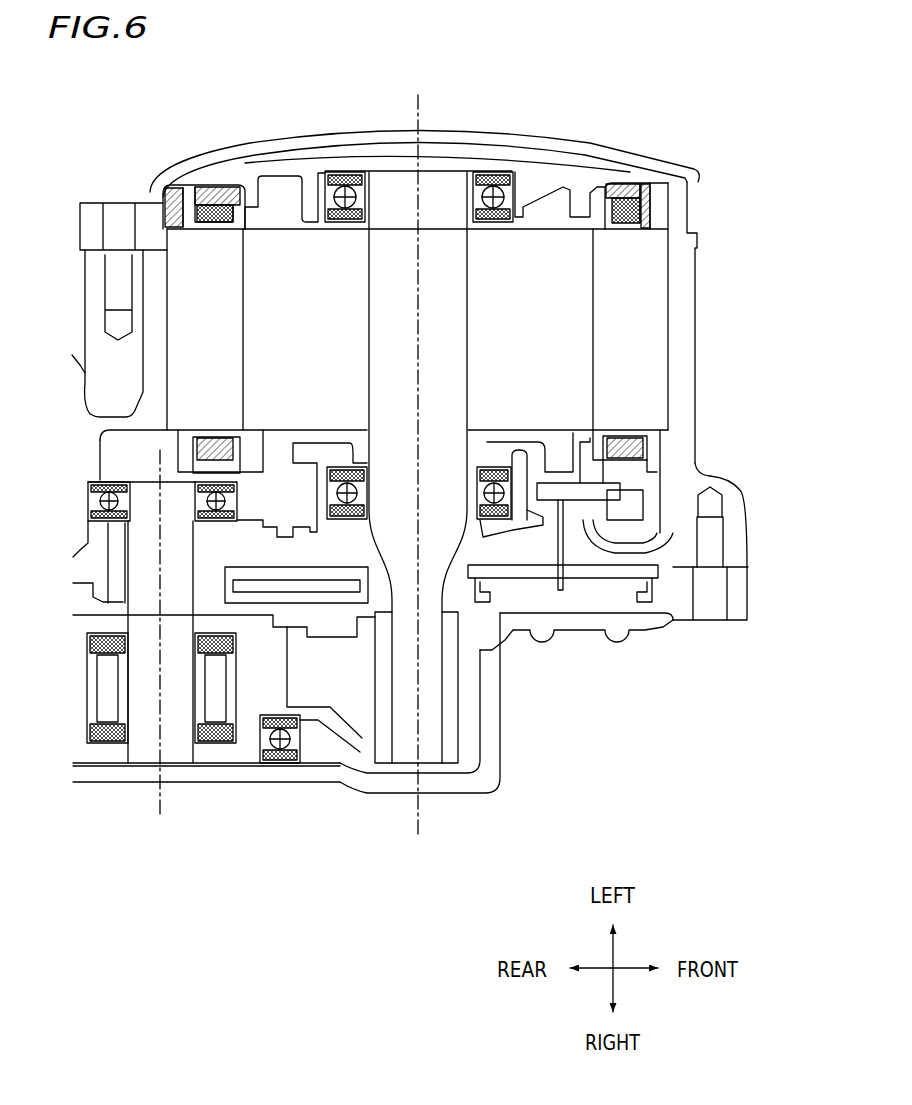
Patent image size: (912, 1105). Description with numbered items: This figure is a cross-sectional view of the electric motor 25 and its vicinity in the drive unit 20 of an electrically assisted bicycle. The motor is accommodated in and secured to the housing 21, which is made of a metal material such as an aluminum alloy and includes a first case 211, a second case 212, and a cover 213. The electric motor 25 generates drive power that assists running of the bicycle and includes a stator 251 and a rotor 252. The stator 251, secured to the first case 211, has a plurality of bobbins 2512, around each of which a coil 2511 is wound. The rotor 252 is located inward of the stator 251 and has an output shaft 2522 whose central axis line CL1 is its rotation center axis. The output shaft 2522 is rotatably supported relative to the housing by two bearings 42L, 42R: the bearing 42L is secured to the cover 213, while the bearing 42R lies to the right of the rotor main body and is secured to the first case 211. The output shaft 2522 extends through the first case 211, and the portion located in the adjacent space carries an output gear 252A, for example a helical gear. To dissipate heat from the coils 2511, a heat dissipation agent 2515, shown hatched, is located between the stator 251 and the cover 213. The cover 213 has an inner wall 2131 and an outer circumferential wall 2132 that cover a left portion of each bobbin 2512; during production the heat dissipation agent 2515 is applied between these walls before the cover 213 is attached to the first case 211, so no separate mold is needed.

The drive unit 20 is at (621, 82).
The housing 21 is at (742, 489).
The first case 211 is at (682, 440).
The second case 212 is at (640, 630).
The cover 213 is at (550, 178).
The inner wall 2131 is at (253, 203).
The outer circumferential wall 2132 is at (160, 208).
The electric motor 25 is at (279, 206).
The stator 251 is at (671, 348).
The coil 2511 is at (685, 244).
The bobbin 2512 is at (630, 222).
The heat dissipation agent 2515 is at (215, 197).
The rotor 252 is at (300, 223).
The output shaft 2522 is at (440, 187).
The output gear 252A is at (452, 722).
The bearing 42L is at (337, 178).
The bearing 42R is at (508, 519).
The central axis line CL1 is at (421, 806).